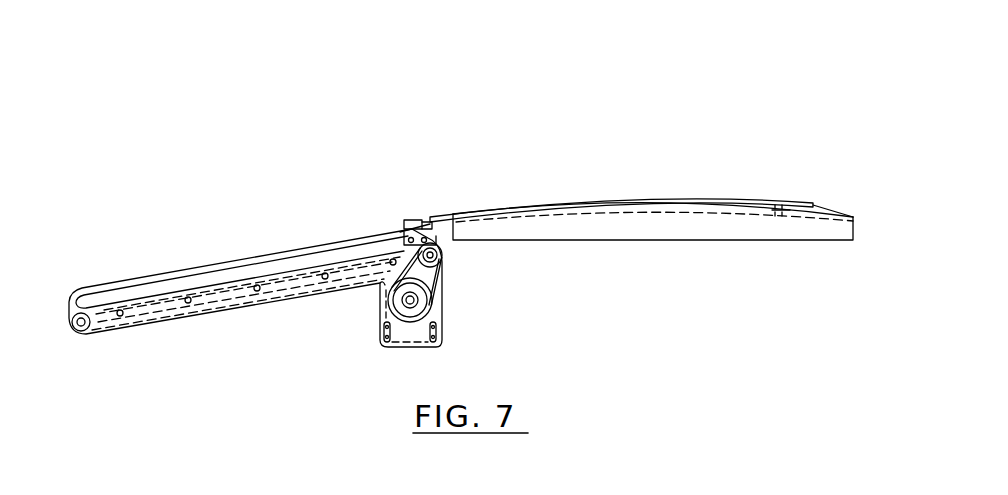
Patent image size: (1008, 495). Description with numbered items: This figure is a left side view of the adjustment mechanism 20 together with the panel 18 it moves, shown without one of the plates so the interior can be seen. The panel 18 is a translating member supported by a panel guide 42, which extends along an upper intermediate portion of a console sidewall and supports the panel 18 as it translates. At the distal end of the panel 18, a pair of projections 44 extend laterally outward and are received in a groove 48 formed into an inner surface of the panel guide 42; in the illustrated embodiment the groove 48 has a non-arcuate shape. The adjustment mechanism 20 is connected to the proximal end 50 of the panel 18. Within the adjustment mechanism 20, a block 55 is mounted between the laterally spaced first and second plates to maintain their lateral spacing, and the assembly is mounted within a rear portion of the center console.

The panel 18 is at (585, 200).
The adjustment mechanism 20 is at (301, 240).
The panel guide 42 is at (680, 230).
The projection 44 is at (778, 208).
The groove 48 is at (858, 218).
The proximal end 50 is at (413, 219).
The block 55 is at (188, 304).